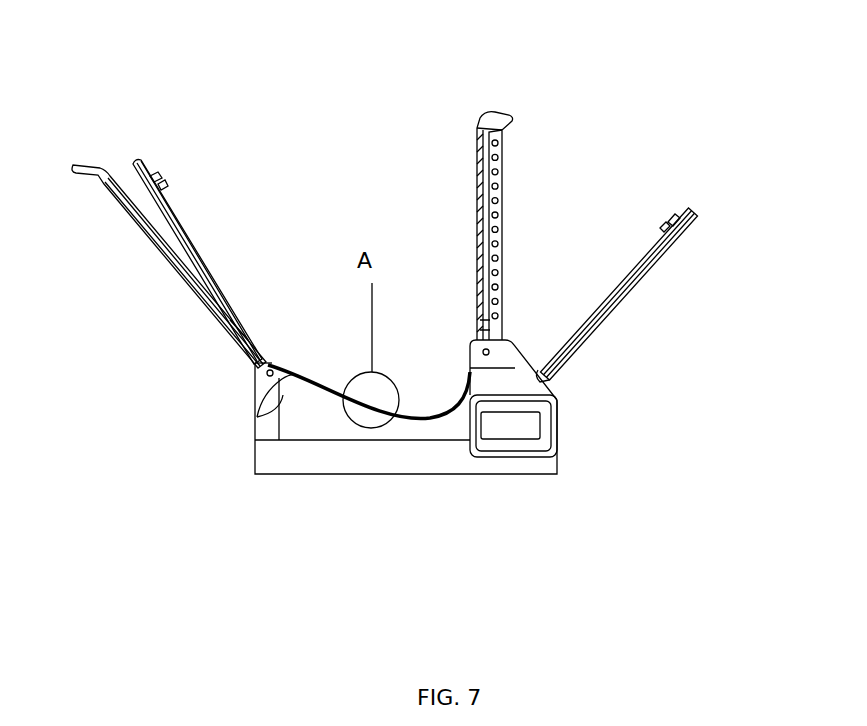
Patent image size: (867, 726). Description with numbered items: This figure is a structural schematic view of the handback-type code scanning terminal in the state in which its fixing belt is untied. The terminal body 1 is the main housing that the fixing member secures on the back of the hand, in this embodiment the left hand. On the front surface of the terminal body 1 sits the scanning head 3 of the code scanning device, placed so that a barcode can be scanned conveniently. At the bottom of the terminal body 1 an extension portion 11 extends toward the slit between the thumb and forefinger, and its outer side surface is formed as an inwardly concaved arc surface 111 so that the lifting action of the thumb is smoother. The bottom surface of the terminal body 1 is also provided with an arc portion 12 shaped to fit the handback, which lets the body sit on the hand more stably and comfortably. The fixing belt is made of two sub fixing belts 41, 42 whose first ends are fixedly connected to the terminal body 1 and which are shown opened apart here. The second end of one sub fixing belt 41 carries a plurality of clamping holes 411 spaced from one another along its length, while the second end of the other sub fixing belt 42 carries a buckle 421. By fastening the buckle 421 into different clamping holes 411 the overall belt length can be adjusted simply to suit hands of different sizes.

The terminal body 1 is at (348, 455).
The extension portion 11 is at (490, 355).
The arc surface 111 is at (548, 368).
The arc portion 12 is at (424, 417).
The scanning head 3 is at (510, 427).
The sub fixing belt 41 is at (603, 185).
The clamping holes 411 is at (503, 176).
The sub fixing belt 42 is at (203, 250).
The buckle 421 is at (158, 178).